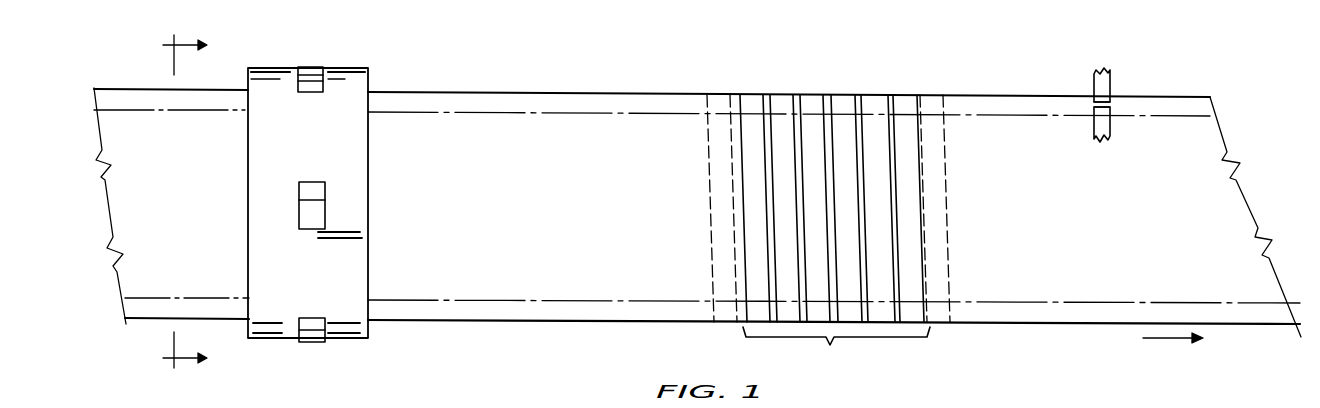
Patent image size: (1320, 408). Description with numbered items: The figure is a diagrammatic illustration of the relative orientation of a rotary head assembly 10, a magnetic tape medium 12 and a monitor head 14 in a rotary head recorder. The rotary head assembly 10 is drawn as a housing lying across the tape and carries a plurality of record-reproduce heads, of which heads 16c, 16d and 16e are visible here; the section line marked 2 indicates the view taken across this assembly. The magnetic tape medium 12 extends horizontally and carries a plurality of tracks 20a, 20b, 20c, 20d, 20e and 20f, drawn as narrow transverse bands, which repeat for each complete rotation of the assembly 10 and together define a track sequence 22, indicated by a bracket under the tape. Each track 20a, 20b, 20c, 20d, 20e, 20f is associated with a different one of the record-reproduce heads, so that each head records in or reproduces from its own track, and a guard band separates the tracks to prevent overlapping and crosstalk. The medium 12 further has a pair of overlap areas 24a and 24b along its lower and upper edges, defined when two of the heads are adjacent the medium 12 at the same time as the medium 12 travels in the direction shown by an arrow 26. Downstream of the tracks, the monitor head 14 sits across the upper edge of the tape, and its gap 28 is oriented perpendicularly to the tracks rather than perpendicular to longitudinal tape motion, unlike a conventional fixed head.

The section line of FIG. 2 is at (192, 202).
The rotary head assembly 10 is at (335, 68).
The magnetic tape medium 12 is at (602, 133).
The monitor head 14 is at (1124, 79).
The record-reproduce head 16c is at (318, 318).
The record-reproduce head 16d is at (312, 182).
The record-reproduce head 16e is at (313, 93).
The track 20a is at (903, 100).
The track 20b is at (872, 100).
The track 20c is at (847, 98).
The track 20d is at (813, 97).
The track 20e is at (780, 97).
The track 20f is at (750, 100).
The track sequence 22 is at (836, 349).
The overlap area 24a is at (472, 312).
The overlap area 24b is at (527, 103).
The arrow 26 is at (1168, 340).
The gap 28 is at (1112, 106).